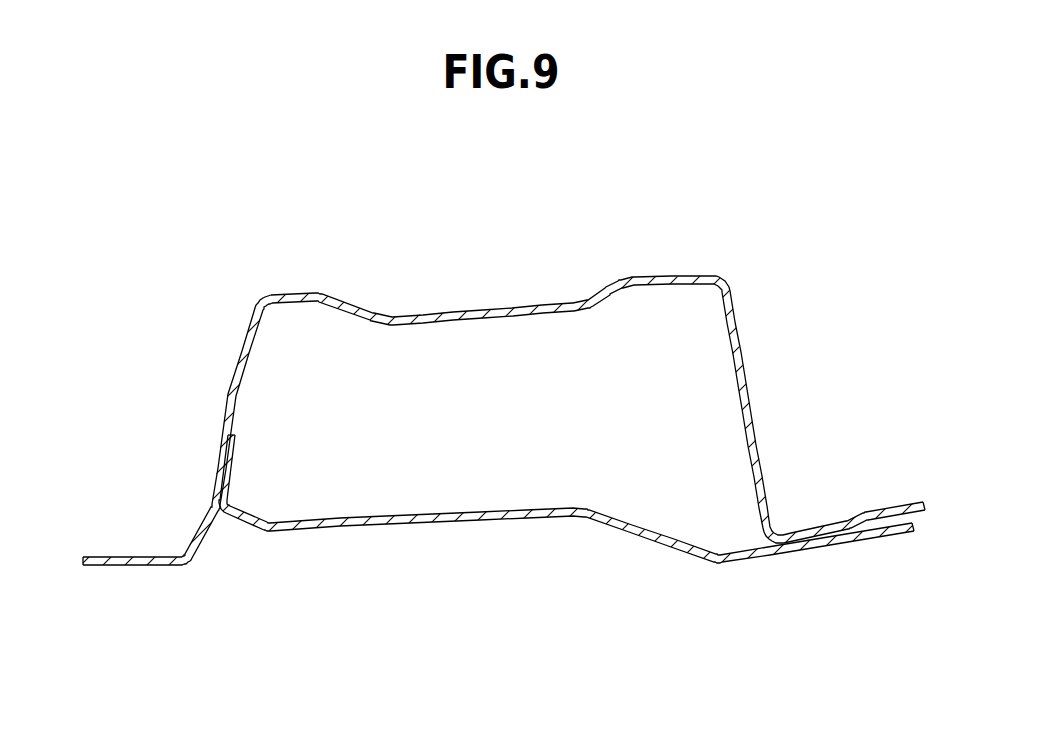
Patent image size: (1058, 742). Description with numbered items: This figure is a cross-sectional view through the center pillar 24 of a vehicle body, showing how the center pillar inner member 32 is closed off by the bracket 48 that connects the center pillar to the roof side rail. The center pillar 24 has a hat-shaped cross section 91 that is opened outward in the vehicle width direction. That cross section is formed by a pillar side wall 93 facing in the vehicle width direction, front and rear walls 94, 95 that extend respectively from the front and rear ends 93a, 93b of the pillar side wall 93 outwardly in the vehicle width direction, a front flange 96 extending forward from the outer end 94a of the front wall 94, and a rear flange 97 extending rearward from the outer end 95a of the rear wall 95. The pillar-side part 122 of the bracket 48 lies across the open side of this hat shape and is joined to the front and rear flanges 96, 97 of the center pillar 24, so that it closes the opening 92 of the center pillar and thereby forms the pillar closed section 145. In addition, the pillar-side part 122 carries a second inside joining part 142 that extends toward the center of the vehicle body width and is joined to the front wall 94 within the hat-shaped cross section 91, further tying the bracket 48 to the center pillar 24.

The center pillar 24 is at (397, 260).
The center pillar inner member 32 is at (380, 312).
The bracket 48 is at (525, 543).
The hat-shaped cross section 91 is at (462, 297).
The opening 92 is at (215, 523).
The pillar side wall 93 is at (540, 302).
The front end of pillar side wall 93a is at (257, 298).
The rear end of pillar side wall 93b is at (712, 283).
The front wall 94 is at (227, 390).
The outer end of front wall 94a is at (188, 565).
The rear wall 95 is at (753, 382).
The outer end of rear wall 95a is at (780, 537).
The front flange 96 is at (137, 555).
The rear flange 97 is at (833, 525).
The pillar-side part 122 is at (553, 517).
The second inside joining part 142 is at (240, 440).
The pillar closed section 145 is at (447, 433).